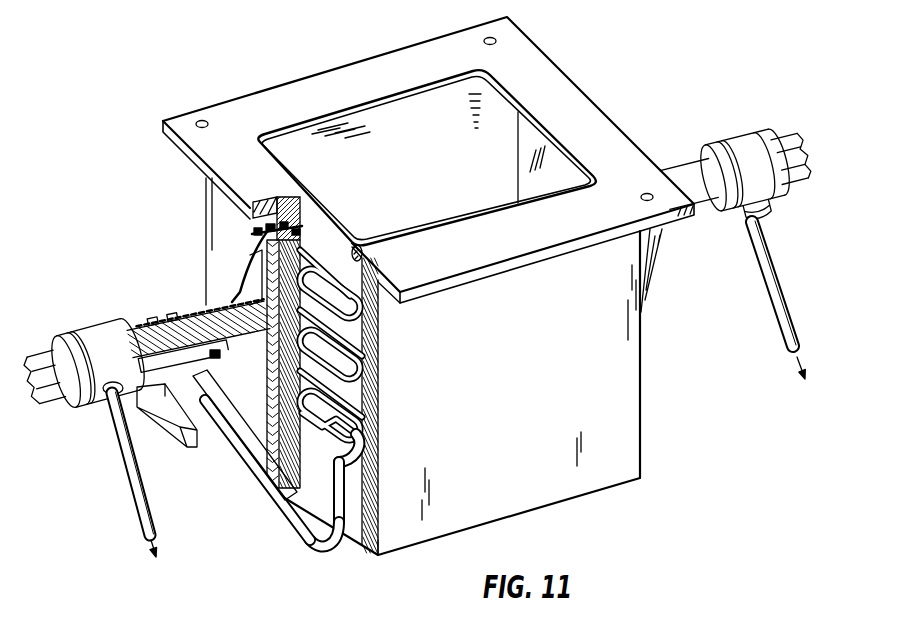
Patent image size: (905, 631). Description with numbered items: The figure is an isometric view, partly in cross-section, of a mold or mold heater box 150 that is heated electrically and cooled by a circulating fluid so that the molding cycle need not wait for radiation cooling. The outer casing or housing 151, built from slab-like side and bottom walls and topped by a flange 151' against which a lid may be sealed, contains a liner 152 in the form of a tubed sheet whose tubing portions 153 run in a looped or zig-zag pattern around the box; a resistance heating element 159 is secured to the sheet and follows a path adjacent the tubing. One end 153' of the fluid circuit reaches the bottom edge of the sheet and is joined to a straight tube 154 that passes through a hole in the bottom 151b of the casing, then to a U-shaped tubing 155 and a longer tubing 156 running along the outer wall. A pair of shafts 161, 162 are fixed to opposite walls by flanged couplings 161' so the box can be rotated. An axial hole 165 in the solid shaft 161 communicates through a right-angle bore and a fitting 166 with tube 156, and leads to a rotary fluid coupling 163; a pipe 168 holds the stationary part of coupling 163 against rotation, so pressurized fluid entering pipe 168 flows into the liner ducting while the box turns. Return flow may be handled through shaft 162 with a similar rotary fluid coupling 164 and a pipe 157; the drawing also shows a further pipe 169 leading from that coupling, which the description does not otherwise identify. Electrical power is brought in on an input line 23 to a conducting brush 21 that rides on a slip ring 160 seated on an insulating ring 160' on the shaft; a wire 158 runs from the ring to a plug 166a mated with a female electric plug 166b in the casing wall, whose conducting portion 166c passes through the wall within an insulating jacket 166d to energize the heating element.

The mold or mold heater box 150 is at (608, 86).
The outer casing or housing 151 is at (485, 393).
The flange 151' is at (428, 158).
The bottom of the outer casing 151b is at (381, 557).
The liner or tubed sheet 152 is at (384, 100).
The tubing portions or fluid circuit 153 is at (356, 314).
The end of the fluid circuit 153' is at (383, 448).
The section of straight tube 154 is at (343, 513).
The section of U-shaped tubing 155 is at (319, 553).
The section of tubing 156 is at (295, 513).
The pipe 157 is at (652, 275).
The conductor or wire 158 is at (230, 297).
The resistance heating element 159 is at (362, 243).
The slip ring 160 is at (186, 305).
The insulating ring 160' is at (161, 307).
The shaft 161 is at (43, 399).
The flanged coupling 161' is at (273, 383).
The shaft 162 is at (770, 143).
The rotary fluid coupling 163 is at (97, 337).
The rotary fluid coupling 164 is at (733, 147).
The axial hole or bore 165 is at (132, 330).
The fitting 166 is at (220, 358).
The plug 166a is at (252, 240).
The female electric plug 166b is at (280, 226).
The conducting portion of the female plug 166c is at (330, 182).
The jacket of electrical insulating material 166d is at (330, 197).
The pipe 168 is at (128, 490).
The handle 169 is at (770, 253).
The electrically conducting brush 21 is at (185, 404).
The input line 23 is at (138, 427).